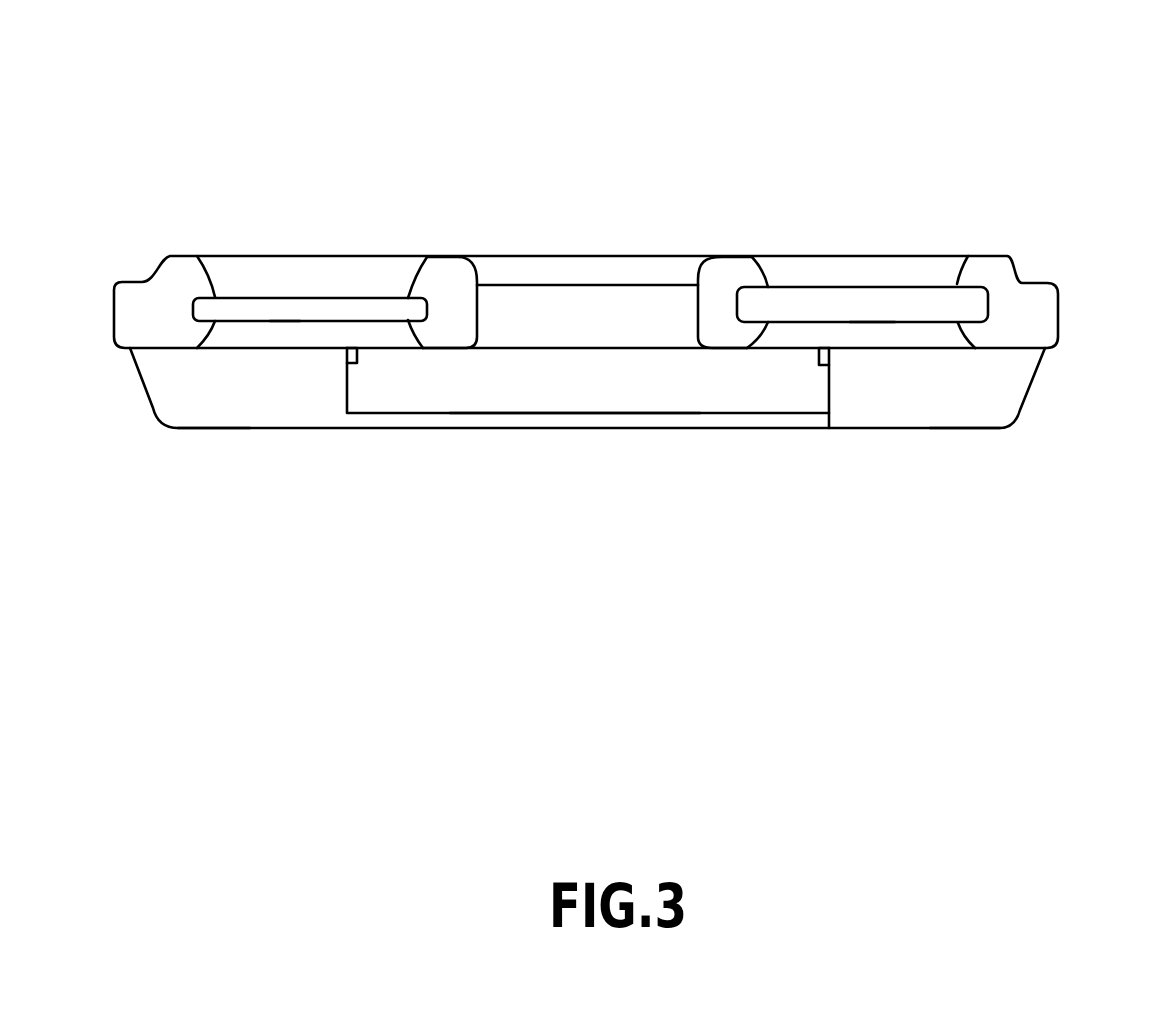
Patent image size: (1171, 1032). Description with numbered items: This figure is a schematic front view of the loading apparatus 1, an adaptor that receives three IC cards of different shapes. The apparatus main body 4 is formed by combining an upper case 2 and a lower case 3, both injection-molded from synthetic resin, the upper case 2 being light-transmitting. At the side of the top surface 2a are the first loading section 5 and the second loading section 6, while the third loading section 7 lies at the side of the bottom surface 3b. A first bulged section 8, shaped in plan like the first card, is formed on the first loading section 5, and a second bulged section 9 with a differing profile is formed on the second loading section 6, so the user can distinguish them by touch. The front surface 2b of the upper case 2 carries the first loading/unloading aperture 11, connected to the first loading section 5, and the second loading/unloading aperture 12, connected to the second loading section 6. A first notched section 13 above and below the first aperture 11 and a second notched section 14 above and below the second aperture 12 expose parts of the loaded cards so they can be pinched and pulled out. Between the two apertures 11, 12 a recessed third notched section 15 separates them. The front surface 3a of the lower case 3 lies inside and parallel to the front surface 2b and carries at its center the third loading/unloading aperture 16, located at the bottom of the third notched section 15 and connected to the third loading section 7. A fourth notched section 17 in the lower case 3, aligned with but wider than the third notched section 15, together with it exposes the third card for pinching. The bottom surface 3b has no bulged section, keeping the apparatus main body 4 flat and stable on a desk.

The loading apparatus 1 is at (1070, 117).
The upper case 2 is at (1023, 325).
The top surface 2a is at (590, 283).
The front surface 2b is at (172, 275).
The lower case 3 is at (1023, 392).
The front surface 3a is at (215, 429).
The bottom surface 3b is at (978, 429).
The apparatus main body 4 is at (1135, 310).
The first loading section 5 is at (877, 250).
The second loading section 6 is at (340, 247).
The third loading section 7 is at (487, 505).
The first bulged section 8 is at (798, 256).
The second bulged section 9 is at (262, 256).
The first loading/unloading aperture 11 is at (872, 323).
The second loading/unloading aperture 12 is at (278, 319).
The first notched section 13 is at (760, 256).
The second notched section 14 is at (415, 265).
The third notched section 15 is at (697, 270).
The third loading/unloading aperture 16 is at (565, 411).
The fourth notched section 17 is at (828, 429).